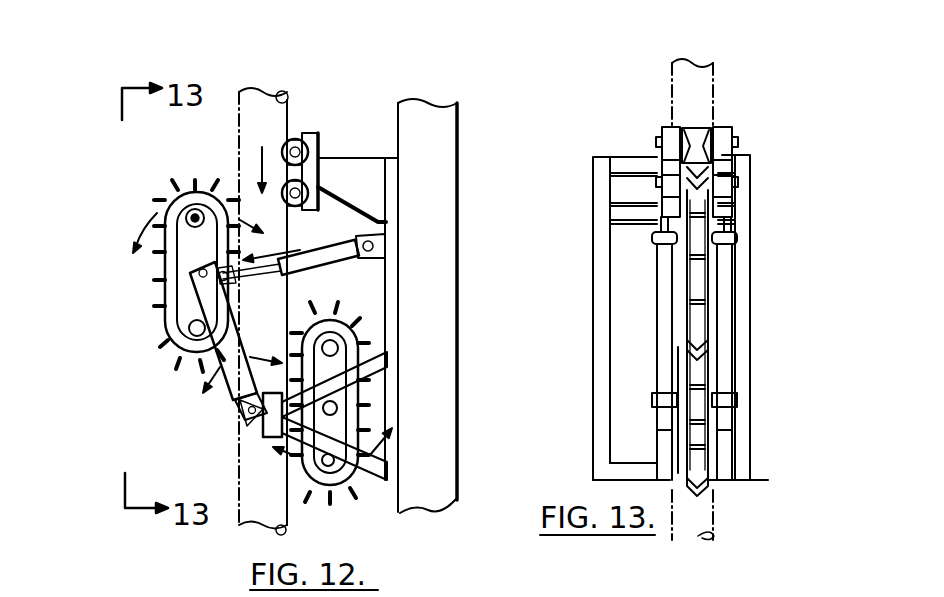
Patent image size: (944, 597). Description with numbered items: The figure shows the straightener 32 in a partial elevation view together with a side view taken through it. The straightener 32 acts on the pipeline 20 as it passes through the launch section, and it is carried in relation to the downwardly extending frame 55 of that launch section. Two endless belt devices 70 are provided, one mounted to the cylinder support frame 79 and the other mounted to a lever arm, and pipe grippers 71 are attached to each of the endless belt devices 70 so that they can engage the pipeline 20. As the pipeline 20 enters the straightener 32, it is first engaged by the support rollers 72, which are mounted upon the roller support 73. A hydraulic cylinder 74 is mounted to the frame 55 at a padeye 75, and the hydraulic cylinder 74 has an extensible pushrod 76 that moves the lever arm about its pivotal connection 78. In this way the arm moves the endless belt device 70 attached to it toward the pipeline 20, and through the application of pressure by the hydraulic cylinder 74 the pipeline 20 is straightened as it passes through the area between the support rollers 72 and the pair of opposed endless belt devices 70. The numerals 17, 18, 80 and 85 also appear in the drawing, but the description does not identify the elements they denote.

In FIG. 12, the hydraulic ram 17 is at (240, 389).
In FIG. 12, the lower link arm 18 is at (366, 468).
In FIG. 12, the pipeline 20 is at (300, 86).
In FIG. 13, the pipeline 20 is at (718, 80).
In FIG. 12, the straightener 32 is at (100, 344).
In FIG. 13, the straightener 32 is at (813, 272).
In FIG. 12, the frame 55 is at (458, 195).
In FIG. 13, the frame 55 is at (593, 322).
In FIG. 12, the endless belt devices 70 is at (182, 190).
In FIG. 12, the pipe grippers 71 is at (350, 287).
In FIG. 12, the support rollers 72 is at (296, 132).
In FIG. 12, the roller support 73 is at (368, 200).
In FIG. 12, the hydraulic cylinder 74 is at (350, 247).
In FIG. 12, the padeye 75 is at (380, 248).
In FIG. 12, the extensible pushrods 76 is at (262, 319).
In FIG. 12, the pivotal connection 78 is at (250, 413).
In FIG. 12, the cylinder support frame 79 is at (386, 357).
In FIG. 12, the sprocket pivot pin 80 is at (197, 214).
In FIG. 13, the base member 85 is at (551, 595).